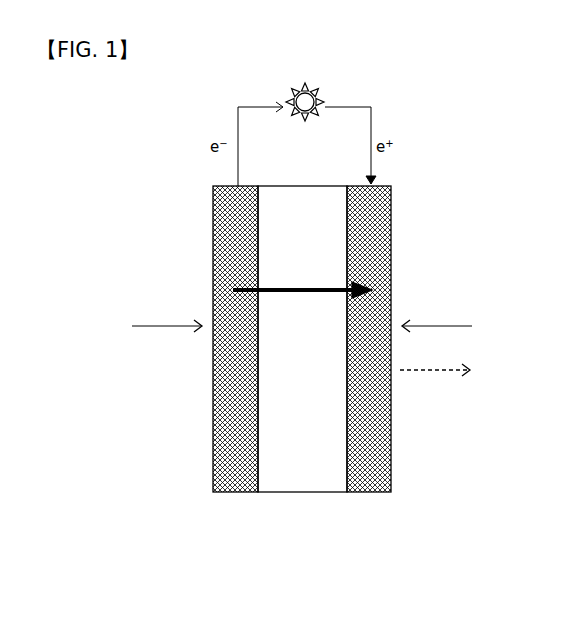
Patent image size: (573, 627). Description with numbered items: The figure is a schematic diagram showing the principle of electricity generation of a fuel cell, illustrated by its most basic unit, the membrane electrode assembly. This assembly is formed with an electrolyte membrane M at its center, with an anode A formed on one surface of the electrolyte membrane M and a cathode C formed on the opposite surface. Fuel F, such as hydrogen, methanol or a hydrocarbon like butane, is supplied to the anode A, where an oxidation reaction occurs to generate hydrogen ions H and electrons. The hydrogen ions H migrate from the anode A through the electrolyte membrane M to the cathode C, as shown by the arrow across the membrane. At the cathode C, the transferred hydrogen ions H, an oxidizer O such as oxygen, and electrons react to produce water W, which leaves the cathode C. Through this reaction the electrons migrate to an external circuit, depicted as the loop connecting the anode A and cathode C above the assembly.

The anode A is at (235, 492).
The electrolyte membrane M is at (302, 492).
The cathode C is at (372, 492).
The hydrogen ions H is at (302, 305).
The fuel F is at (157, 327).
The oxidizer O is at (446, 327).
The water W is at (447, 372).